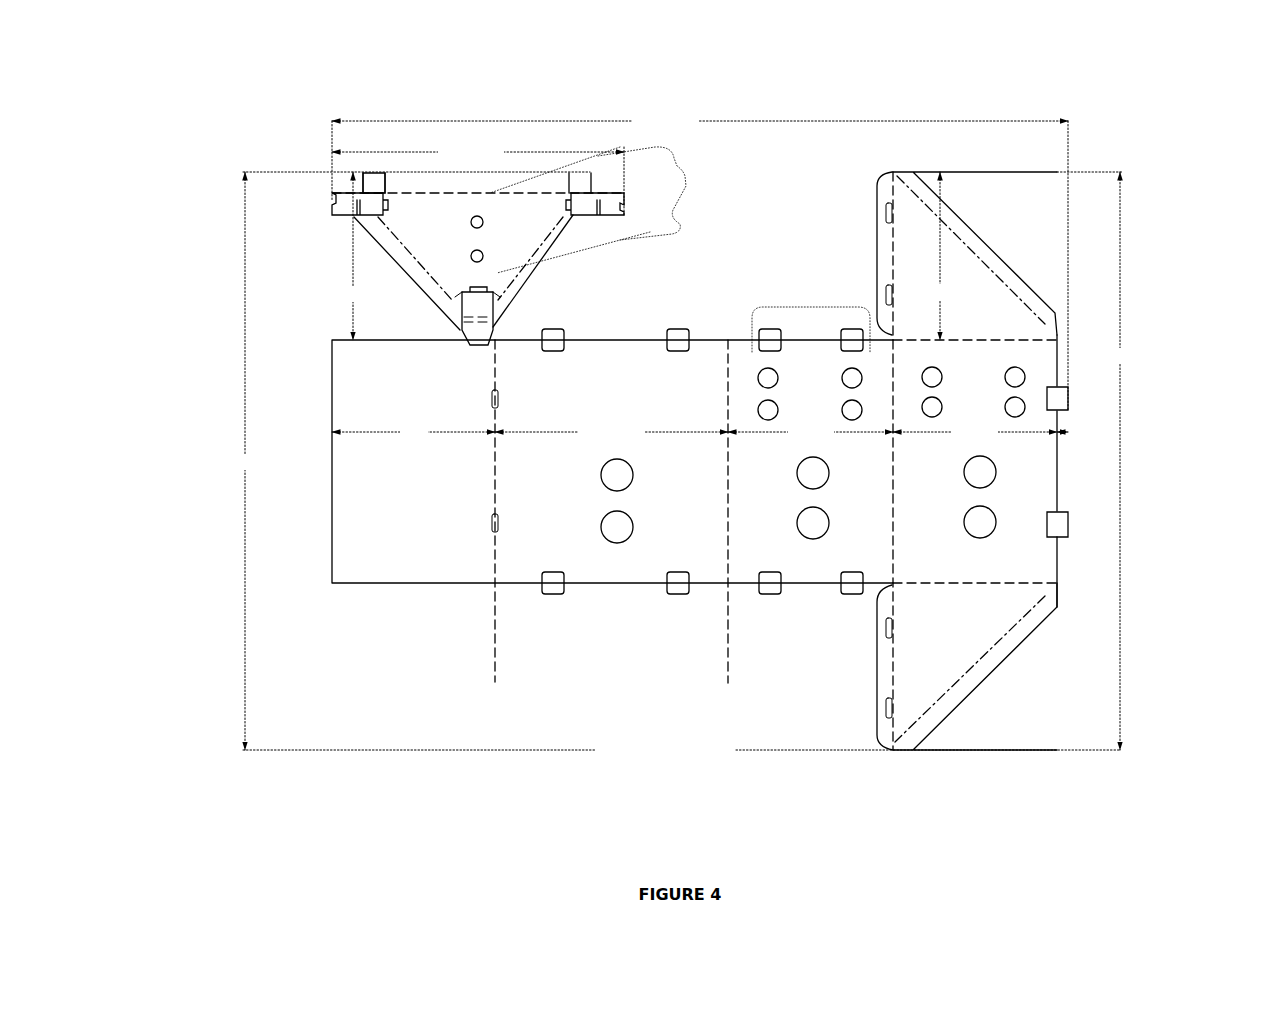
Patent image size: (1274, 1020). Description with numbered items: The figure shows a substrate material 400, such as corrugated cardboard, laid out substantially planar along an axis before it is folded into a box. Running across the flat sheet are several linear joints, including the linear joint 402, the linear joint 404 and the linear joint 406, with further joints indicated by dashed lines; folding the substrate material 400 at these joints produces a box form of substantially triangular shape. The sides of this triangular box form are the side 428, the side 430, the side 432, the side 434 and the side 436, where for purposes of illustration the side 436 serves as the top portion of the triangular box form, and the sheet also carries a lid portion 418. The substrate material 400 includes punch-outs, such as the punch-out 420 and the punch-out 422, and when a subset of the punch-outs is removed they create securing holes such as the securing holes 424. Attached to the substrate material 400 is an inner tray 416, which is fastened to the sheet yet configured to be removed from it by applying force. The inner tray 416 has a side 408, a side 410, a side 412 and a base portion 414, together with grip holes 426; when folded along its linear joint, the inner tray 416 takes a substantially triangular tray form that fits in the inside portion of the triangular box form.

The substrate material 400 is at (1135, 108).
The linear joint 402 is at (493, 523).
The linear joint 404 is at (730, 523).
The linear joint 406 is at (890, 553).
The side 408 is at (420, 274).
The side 410 is at (413, 185).
The side 412 is at (515, 290).
The base portion 414 is at (485, 195).
The inner tray 416 is at (437, 193).
The lid portion 418 is at (1049, 415).
The punch-out 420 is at (610, 487).
The punch-out 422 is at (810, 520).
The securing holes 424 is at (823, 306).
The grip holes 426 is at (683, 167).
The side 428 is at (558, 550).
The side 430 is at (810, 568).
The side 432 is at (1030, 550).
The side 434 is at (980, 597).
The side 436 is at (997, 305).